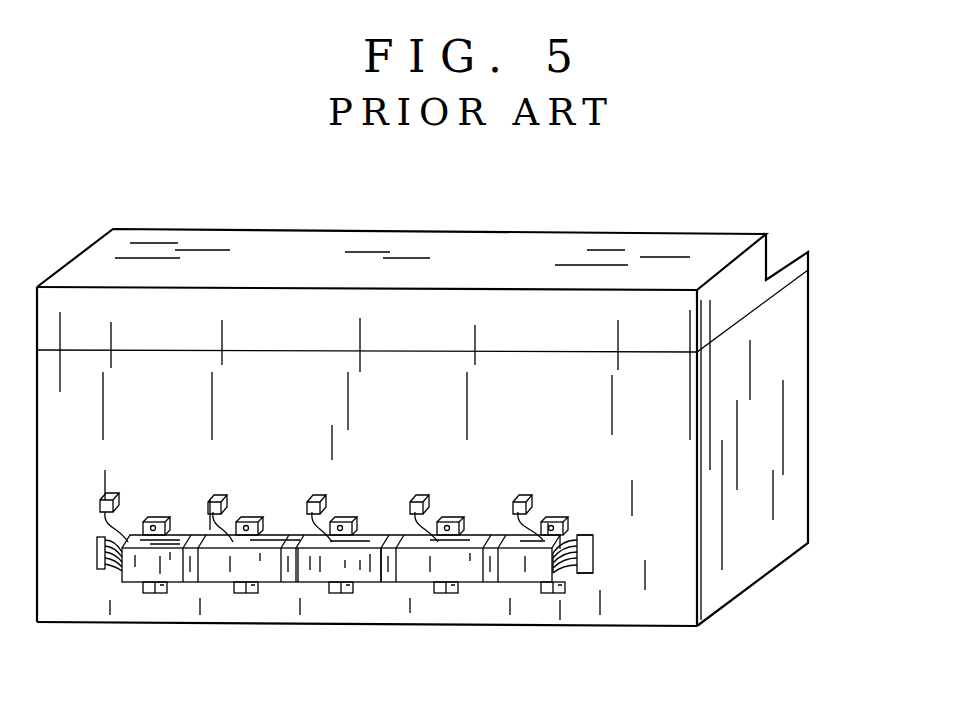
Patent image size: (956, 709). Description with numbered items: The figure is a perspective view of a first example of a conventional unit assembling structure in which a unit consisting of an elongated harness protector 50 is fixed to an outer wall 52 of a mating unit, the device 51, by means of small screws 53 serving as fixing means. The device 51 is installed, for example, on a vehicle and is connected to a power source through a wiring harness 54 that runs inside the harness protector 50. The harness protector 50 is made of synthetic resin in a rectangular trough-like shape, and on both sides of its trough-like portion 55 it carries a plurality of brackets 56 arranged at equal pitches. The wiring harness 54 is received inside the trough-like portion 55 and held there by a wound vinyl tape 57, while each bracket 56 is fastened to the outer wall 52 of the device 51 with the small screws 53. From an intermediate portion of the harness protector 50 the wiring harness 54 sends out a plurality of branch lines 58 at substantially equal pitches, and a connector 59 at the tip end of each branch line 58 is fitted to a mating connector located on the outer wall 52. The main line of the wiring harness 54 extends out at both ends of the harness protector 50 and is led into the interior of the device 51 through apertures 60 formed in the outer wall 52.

The harness protector 50 is at (365, 585).
The device 51 is at (809, 379).
The outer wall 52 is at (647, 613).
The small screws 53 is at (554, 532).
The wiring harness 54 is at (575, 574).
The trough-like portion 55 is at (418, 573).
The brackets 56 is at (548, 523).
The wound vinyl tape 57 is at (490, 582).
The branch lines 58 is at (515, 526).
The connector 59 is at (517, 500).
The apertures 60 is at (594, 556).